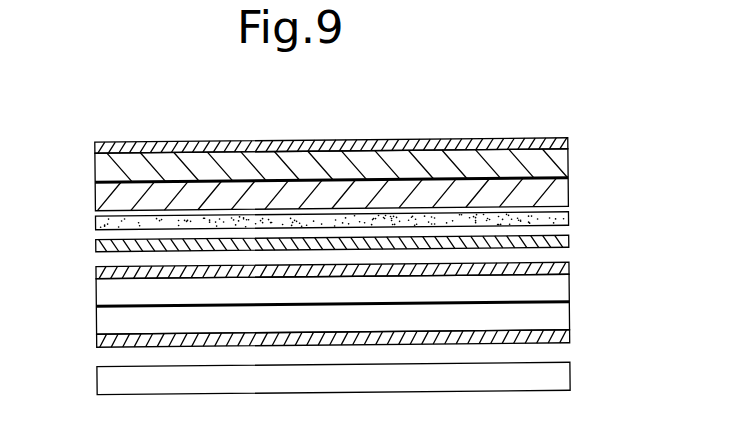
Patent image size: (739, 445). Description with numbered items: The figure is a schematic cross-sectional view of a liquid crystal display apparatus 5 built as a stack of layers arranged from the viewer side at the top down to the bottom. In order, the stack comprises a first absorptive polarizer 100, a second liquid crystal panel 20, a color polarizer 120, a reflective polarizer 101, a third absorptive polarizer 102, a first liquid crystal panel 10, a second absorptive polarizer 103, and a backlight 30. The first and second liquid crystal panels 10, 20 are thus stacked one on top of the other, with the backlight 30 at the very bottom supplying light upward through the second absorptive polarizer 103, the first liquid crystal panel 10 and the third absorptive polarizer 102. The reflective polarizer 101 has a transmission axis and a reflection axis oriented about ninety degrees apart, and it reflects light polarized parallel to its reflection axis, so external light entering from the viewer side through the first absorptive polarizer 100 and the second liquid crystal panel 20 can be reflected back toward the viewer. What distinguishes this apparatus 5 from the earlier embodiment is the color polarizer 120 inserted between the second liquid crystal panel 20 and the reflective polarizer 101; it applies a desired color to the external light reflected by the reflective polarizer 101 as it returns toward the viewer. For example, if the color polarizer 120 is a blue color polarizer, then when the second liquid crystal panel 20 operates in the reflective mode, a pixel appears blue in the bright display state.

The liquid crystal display apparatus 5 is at (414, 128).
The second liquid crystal panel 20 is at (323, 171).
The first absorptive polarizer 100 is at (96, 152).
The color polarizer 120 is at (569, 221).
The reflective polarizer 101 is at (96, 247).
The first liquid crystal panel 10 is at (322, 304).
The third absorptive polarizer 102 is at (96, 273).
The second absorptive polarizer 103 is at (96, 339).
The backlight 30 is at (569, 375).